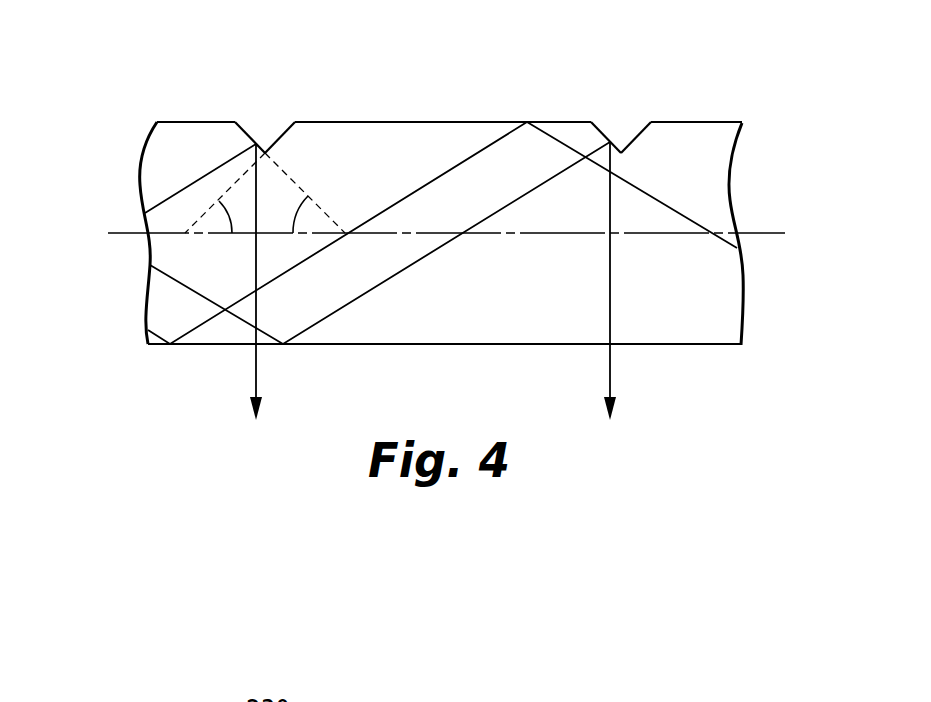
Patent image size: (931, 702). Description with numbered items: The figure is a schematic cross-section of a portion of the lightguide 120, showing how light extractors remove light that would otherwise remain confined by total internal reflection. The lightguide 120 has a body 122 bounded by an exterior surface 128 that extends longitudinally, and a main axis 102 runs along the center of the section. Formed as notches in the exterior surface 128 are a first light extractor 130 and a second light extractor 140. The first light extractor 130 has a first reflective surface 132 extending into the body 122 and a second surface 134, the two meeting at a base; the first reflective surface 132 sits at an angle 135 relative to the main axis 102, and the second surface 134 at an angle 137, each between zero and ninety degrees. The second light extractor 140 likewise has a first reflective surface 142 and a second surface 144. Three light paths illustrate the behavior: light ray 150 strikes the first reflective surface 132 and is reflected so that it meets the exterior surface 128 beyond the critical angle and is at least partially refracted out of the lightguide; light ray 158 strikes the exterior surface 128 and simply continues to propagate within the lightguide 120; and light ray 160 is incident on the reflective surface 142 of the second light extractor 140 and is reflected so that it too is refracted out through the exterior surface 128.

The main axis 102 is at (123, 235).
The lightguide 120 is at (395, 217).
The body 122 is at (167, 175).
The exterior surface 128 is at (468, 347).
The first light extractor 130 is at (292, 100).
The first reflective surface 132 is at (253, 142).
The second surface 134 is at (273, 140).
The angle 135 is at (308, 196).
The angle 137 is at (232, 233).
The second light extractor 140 is at (636, 100).
The first reflective surface 142 is at (600, 138).
The second surface 144 is at (640, 138).
The light ray 150 is at (257, 365).
The light ray 158 is at (690, 215).
The light ray 160 is at (610, 365).